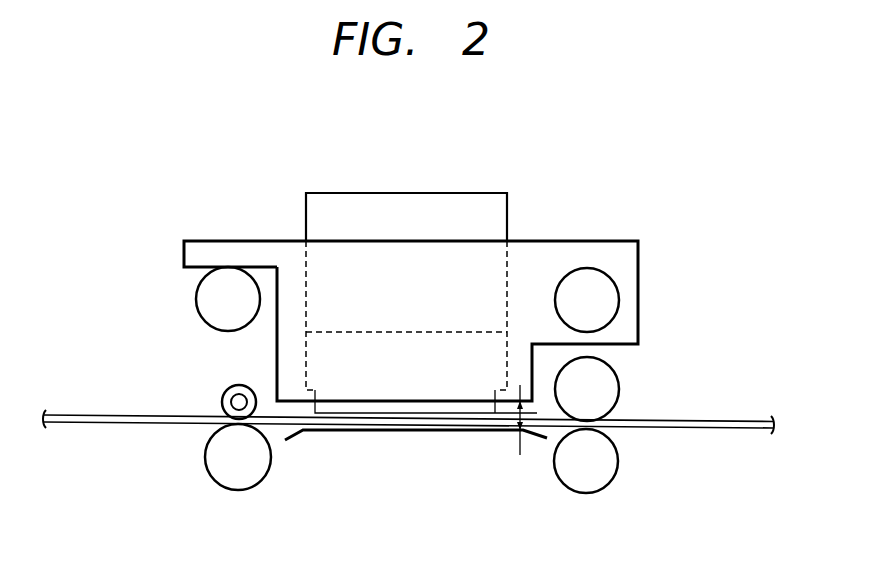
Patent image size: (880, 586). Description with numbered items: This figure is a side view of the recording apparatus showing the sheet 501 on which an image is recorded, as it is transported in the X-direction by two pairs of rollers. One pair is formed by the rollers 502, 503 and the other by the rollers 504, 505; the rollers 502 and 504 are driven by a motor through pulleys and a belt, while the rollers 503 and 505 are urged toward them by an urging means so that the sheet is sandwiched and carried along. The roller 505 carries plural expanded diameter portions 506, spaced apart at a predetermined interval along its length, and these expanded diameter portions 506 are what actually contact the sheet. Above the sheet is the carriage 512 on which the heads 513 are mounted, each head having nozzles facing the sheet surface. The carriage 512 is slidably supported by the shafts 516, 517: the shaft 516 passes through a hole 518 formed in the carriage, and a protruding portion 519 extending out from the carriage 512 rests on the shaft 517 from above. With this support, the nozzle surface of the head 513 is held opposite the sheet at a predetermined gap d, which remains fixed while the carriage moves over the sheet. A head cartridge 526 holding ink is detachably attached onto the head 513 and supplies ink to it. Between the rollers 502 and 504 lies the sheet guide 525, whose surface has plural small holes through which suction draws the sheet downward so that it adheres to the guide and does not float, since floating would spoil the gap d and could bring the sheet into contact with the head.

The sheet 501 is at (750, 422).
The roller 502 is at (612, 470).
The roller 503 is at (603, 383).
The roller 504 is at (232, 480).
The roller 505 is at (235, 405).
The expanded diameter portion 506 is at (237, 387).
The carriage 512 is at (550, 247).
The head 513 is at (365, 410).
The shaft 516 is at (605, 290).
The shaft 517 is at (200, 297).
The hole 518 is at (587, 268).
The protruding portion 519 is at (235, 247).
The sheet guide 525 is at (313, 441).
The head cartridge 526 is at (445, 200).
The gap d is at (515, 425).